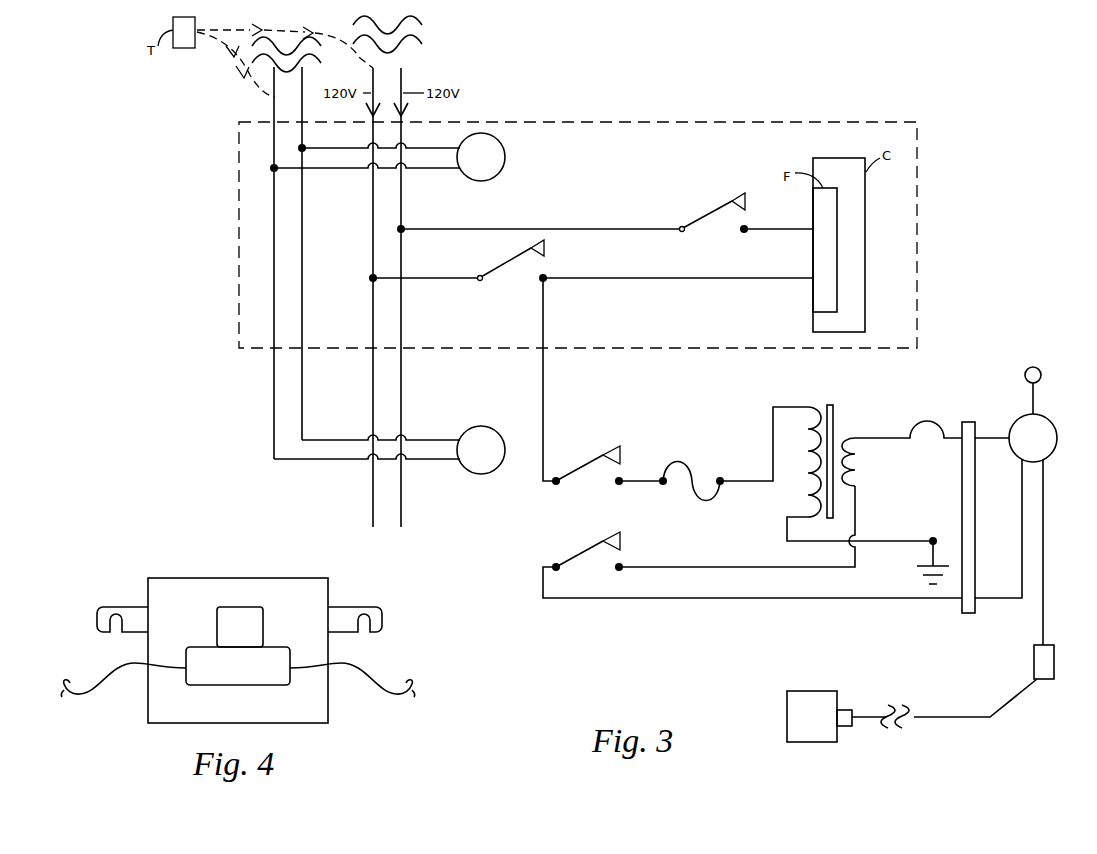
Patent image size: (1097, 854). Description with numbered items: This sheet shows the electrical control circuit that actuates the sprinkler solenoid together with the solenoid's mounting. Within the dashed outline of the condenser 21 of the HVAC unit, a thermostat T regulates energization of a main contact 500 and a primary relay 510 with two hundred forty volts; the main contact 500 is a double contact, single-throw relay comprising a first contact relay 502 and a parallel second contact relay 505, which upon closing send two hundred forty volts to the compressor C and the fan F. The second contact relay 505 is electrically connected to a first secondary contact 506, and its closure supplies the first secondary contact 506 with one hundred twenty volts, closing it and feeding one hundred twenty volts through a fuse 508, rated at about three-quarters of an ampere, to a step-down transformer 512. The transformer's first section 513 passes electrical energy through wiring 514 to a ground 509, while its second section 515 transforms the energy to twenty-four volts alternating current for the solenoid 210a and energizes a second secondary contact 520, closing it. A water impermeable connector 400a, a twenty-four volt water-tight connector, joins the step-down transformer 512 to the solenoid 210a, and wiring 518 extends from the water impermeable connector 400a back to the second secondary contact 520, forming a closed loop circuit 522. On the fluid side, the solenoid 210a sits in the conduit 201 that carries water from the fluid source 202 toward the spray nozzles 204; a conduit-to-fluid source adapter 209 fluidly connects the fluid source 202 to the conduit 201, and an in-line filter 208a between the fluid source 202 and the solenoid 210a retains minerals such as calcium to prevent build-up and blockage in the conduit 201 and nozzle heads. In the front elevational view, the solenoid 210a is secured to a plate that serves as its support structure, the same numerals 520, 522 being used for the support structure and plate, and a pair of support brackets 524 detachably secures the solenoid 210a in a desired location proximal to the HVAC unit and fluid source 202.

In FIG. 3, the condenser 21 is at (586, 120).
In FIG. 3, the main contact 500 is at (506, 150).
In FIG. 3, the first contact relay 502 is at (717, 213).
In FIG. 3, the second contact relay 505 is at (515, 260).
In FIG. 3, the primary relay 510 is at (484, 427).
In FIG. 3, the first secondary contact 506 is at (612, 445).
In FIG. 3, the fuse 508 is at (672, 461).
In FIG. 3, the first section 513 is at (790, 406).
In FIG. 3, the step-down transformer 512 is at (833, 400).
In FIG. 3, the second section 515 is at (857, 438).
In FIG. 3, the wiring 514 is at (786, 526).
In FIG. 3, the second secondary contact 520 is at (612, 529).
In FIG. 4, the second secondary contact 520 is at (225, 633).
In FIG. 3, the ground 509 is at (917, 567).
In FIG. 3, the wiring 518 is at (905, 600).
In FIG. 3, the closed loop circuit 522 is at (756, 604).
In FIG. 4, the closed loop circuit 522 is at (198, 578).
In FIG. 3, the water impermeable connector 400a is at (965, 421).
In FIG. 3, the solenoid 210a is at (1045, 418).
In FIG. 4, the solenoid 210a is at (245, 607).
In FIG. 3, the spray nozzles 204 is at (1028, 368).
In FIG. 3, the conduit 201 is at (1031, 410).
In FIG. 4, the conduit 201 is at (125, 667).
In FIG. 3, the in-line filter 208a is at (1034, 662).
In FIG. 3, the fluid source 202 is at (800, 742).
In FIG. 3, the conduit-to-fluid source adapter 209 is at (845, 727).
In FIG. 4, the support brackets 524 is at (115, 606).